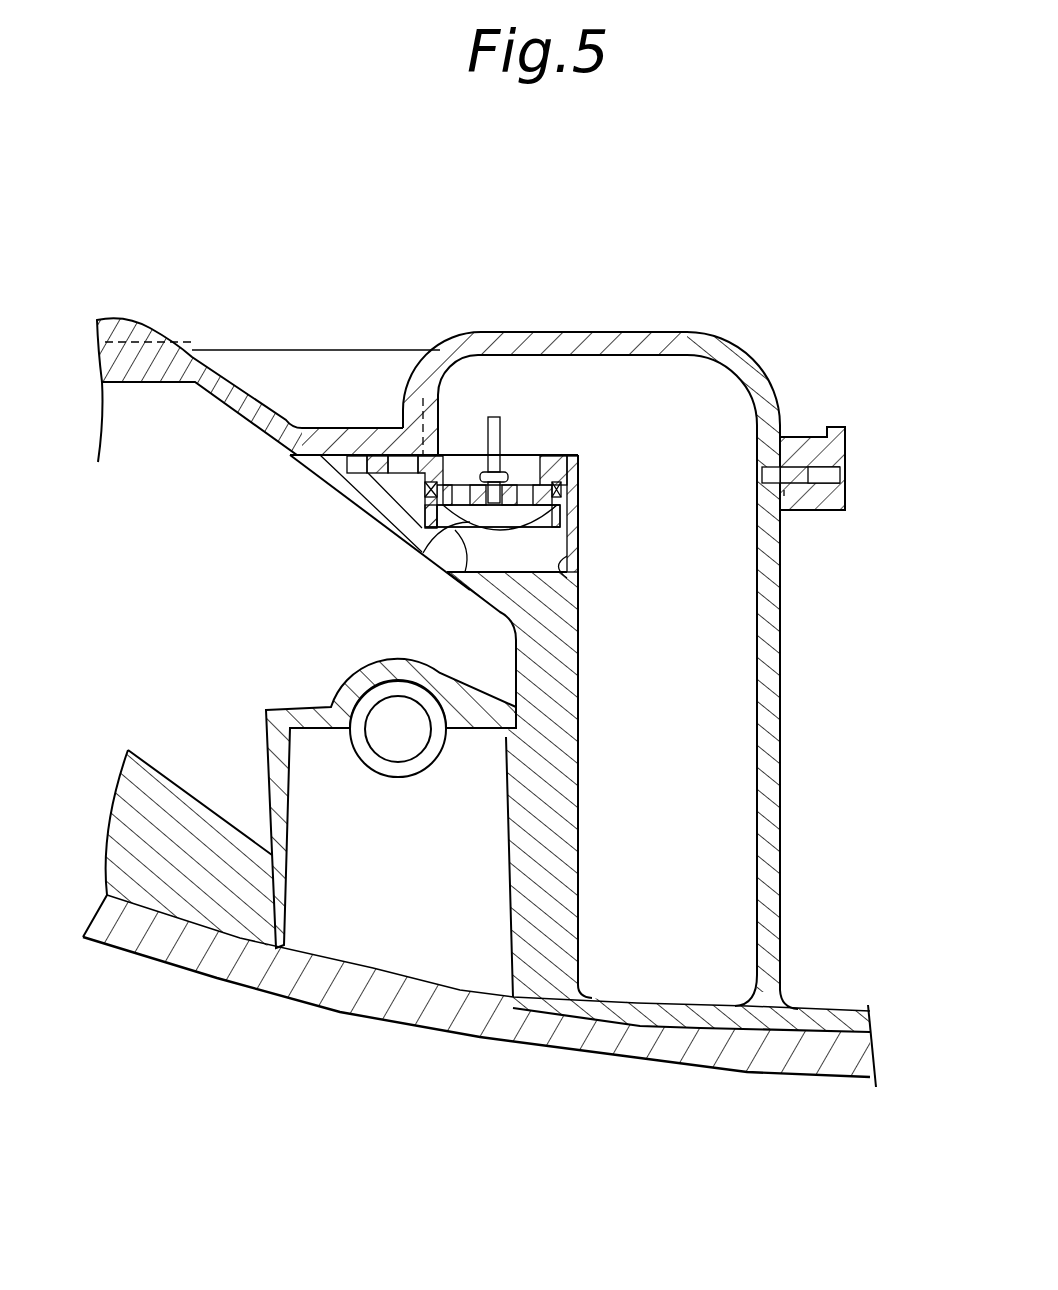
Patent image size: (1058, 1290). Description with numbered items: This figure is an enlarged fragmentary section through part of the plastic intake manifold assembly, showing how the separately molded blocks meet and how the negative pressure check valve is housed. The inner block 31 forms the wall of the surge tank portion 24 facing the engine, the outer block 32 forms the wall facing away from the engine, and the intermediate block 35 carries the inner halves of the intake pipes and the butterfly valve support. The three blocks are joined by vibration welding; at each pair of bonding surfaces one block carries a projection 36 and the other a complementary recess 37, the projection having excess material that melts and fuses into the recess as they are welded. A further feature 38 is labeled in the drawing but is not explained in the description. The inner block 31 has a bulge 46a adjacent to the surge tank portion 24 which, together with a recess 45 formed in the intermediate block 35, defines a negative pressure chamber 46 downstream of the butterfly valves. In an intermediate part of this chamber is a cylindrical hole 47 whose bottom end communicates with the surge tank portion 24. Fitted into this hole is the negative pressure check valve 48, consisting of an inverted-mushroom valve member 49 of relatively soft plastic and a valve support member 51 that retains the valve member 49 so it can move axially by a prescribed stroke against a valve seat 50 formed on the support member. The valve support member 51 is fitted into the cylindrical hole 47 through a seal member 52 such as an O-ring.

The surge tank portion 24 is at (225, 609).
The inner block 31 is at (322, 350).
The outer block 32 is at (405, 1030).
The intermediate block 35 is at (100, 783).
The projection 36 is at (843, 443).
The recess 37 is at (765, 475).
The bolt hole 38 is at (784, 498).
The recess 45 is at (760, 975).
The negative pressure chamber 46 is at (697, 724).
The bulge 46a is at (595, 330).
The cylindrical hole 47 is at (580, 592).
The negative pressure check valve 48 is at (518, 465).
The valve member 49 is at (450, 573).
The valve seat 50 is at (423, 553).
The valve support member 51 is at (562, 514).
The seal member 52 is at (562, 488).